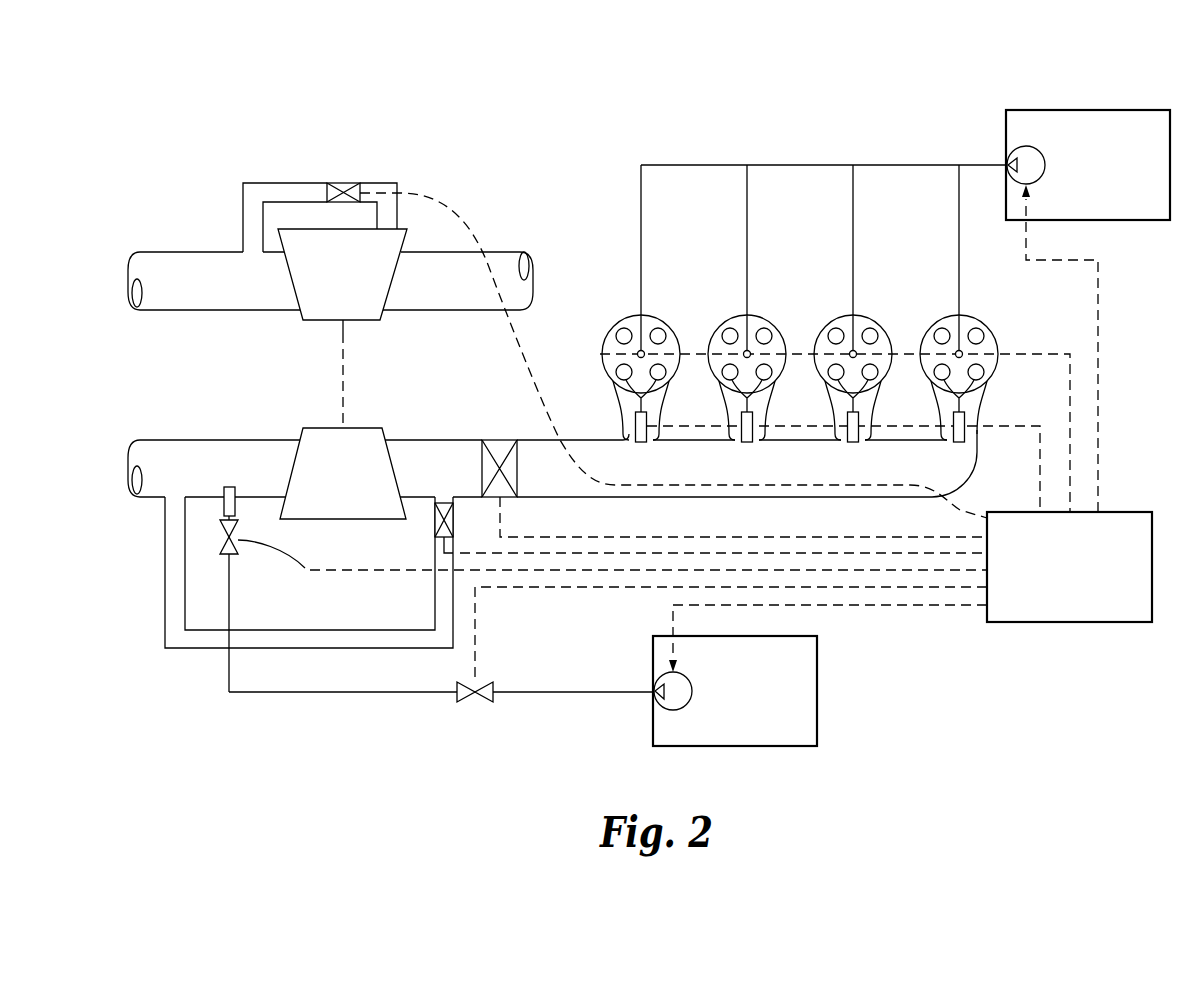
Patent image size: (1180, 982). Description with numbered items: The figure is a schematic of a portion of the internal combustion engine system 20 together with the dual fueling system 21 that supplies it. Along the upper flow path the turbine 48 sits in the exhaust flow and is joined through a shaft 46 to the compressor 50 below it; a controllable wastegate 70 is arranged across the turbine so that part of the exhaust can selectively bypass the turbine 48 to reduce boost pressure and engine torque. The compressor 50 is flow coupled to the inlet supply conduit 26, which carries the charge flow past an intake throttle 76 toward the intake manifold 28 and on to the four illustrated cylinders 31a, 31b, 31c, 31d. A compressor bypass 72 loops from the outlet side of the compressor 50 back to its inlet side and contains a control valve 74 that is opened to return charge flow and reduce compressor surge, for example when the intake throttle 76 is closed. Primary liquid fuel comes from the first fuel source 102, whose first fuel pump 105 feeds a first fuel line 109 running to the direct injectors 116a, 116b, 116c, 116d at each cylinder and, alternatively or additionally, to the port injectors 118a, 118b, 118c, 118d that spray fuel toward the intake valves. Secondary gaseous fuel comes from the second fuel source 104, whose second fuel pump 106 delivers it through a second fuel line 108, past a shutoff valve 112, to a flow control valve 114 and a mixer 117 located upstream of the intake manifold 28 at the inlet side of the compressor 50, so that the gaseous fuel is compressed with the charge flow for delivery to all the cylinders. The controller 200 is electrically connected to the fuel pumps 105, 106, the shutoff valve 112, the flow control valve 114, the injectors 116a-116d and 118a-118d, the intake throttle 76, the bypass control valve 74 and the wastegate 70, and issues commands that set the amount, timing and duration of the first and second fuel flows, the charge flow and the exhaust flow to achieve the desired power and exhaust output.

The internal combustion engine system 20 is at (546, 172).
The fueling system 21 is at (958, 657).
The inlet supply conduit 26 is at (160, 440).
The intake manifold 28 is at (730, 497).
The cylinder 31a is at (930, 325).
The cylinder 31b is at (824, 325).
The cylinder 31c is at (718, 325).
The cylinder 31d is at (612, 325).
The turbocharger shaft 46 is at (311, 371).
The turbine 48 is at (332, 290).
The compressor 50 is at (332, 490).
The wastegate 70 is at (345, 183).
The compressor bypass 72 is at (177, 648).
The control valve 74 is at (443, 503).
The intake throttle 76 is at (500, 440).
The first fuel source 102 is at (1073, 178).
The second fuel source 104 is at (720, 705).
The first fuel pump 105 is at (1043, 158).
The second fuel pump 106 is at (661, 710).
The second fuel line 108 is at (403, 692).
The first fuel line 109 is at (800, 165).
The shutoff valve 112 is at (470, 700).
The flow control valve 114 is at (238, 542).
The direct injector 116a is at (961, 350).
The direct injector 116b is at (855, 350).
The direct injector 116c is at (749, 350).
The direct injector 116d is at (643, 350).
The mixer 117 is at (235, 505).
The port injector 118a is at (954, 414).
The port injector 118b is at (848, 414).
The port injector 118c is at (742, 414).
The port injector 118d is at (636, 414).
The controller 200 is at (1055, 580).